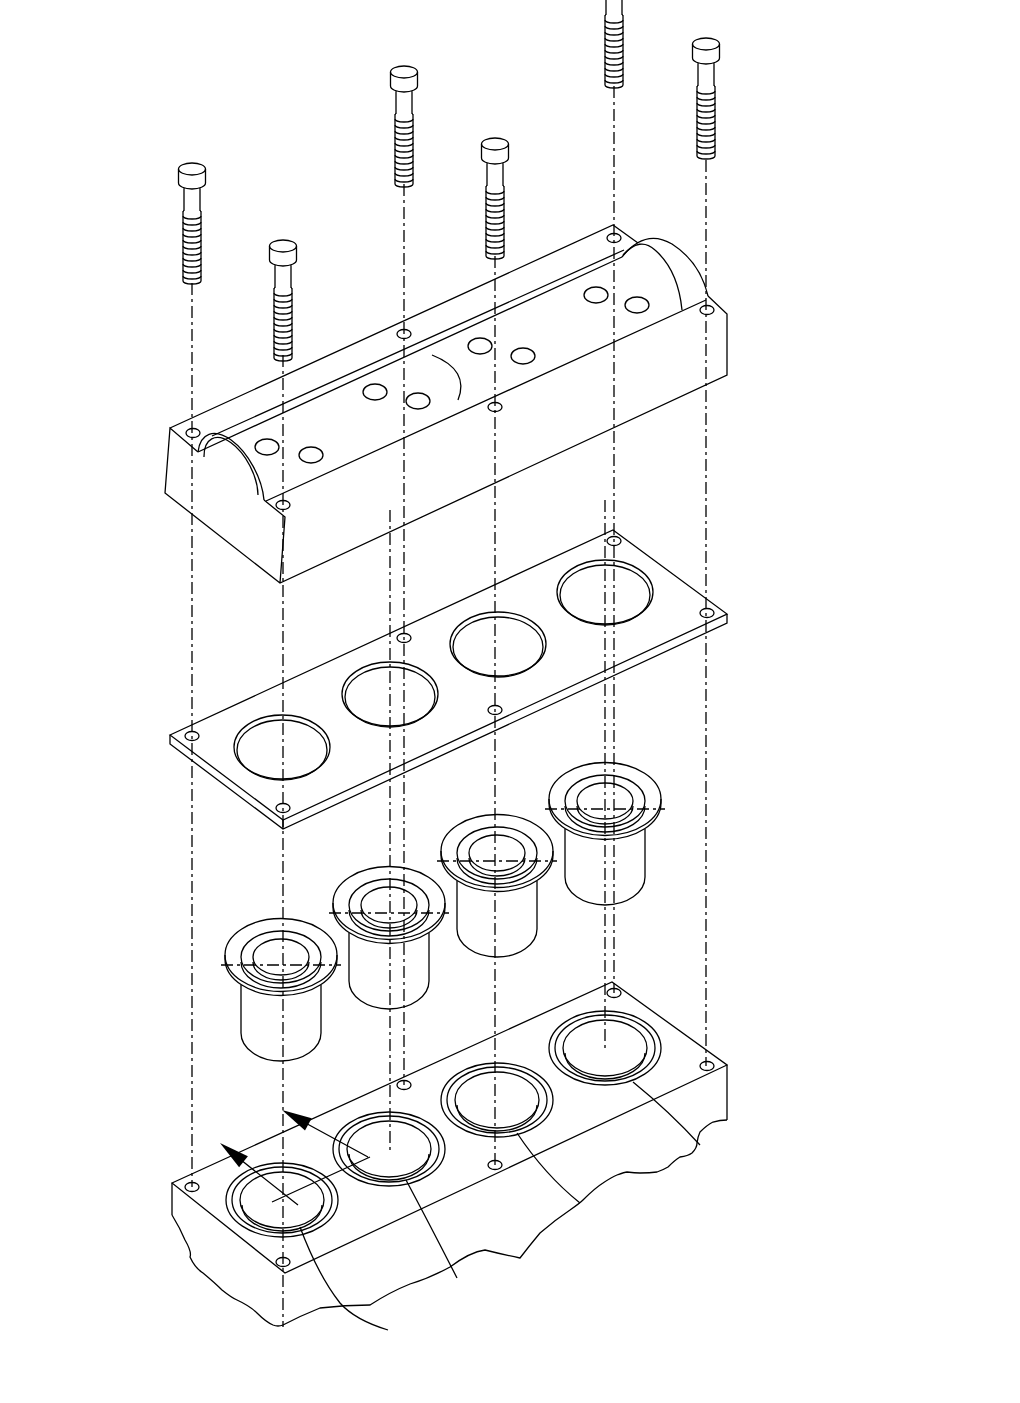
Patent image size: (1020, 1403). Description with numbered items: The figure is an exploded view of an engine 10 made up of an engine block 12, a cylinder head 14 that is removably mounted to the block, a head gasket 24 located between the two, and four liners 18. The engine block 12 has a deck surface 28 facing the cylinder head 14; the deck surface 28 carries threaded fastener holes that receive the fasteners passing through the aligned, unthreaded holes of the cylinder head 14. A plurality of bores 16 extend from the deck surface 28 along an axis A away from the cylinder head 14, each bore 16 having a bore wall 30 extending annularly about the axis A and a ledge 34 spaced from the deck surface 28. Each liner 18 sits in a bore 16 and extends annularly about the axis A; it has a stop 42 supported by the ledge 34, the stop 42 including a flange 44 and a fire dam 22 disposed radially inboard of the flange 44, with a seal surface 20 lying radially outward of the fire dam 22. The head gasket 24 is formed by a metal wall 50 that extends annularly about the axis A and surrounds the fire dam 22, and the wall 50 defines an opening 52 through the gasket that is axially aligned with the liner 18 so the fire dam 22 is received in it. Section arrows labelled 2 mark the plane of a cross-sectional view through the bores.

The engine 10 is at (102, 66).
The engine block 12 is at (463, 1149).
The cylinder head 14 is at (734, 333).
The bore 16 is at (277, 1177).
The liner 18 is at (446, 896).
The seal surface 20 is at (337, 1010).
The fire dam 22 is at (268, 922).
The head gasket 24 is at (485, 652).
The deck surface 28 is at (364, 1222).
The bore wall 30 is at (740, 1157).
The ledge 34 is at (157, 1248).
The stop 42 is at (238, 926).
The flange 44 is at (232, 964).
The wall 50 is at (297, 718).
The opening 52 is at (267, 746).
The section line 2- 2 is at (221, 1157).
The axis A is at (393, 1112).